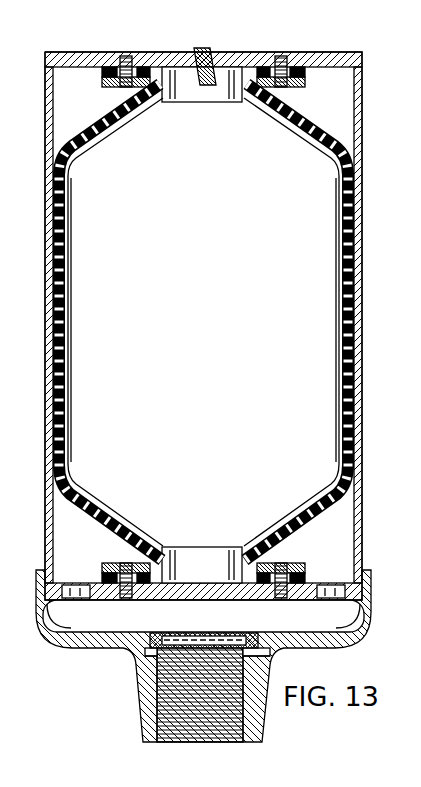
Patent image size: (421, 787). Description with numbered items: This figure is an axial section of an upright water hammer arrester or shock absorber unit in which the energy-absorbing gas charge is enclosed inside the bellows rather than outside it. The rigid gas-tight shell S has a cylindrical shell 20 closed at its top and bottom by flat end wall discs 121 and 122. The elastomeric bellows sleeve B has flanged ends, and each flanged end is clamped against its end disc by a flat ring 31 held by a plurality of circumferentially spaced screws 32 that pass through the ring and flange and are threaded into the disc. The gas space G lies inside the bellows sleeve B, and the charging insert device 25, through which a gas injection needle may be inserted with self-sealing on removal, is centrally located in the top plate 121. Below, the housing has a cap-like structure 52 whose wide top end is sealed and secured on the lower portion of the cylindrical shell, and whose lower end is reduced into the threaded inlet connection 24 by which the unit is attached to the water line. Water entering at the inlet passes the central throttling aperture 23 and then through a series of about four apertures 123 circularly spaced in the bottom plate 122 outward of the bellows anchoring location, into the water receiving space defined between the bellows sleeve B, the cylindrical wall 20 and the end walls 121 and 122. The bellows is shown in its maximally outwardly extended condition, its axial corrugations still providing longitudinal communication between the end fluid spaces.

The top end wall disc 121 is at (130, 53).
The charging insert device 25 is at (206, 50).
The flat ring 31 is at (102, 84).
The screws 32 is at (124, 88).
The shell S is at (44, 208).
The bellows sleeve B is at (76, 234).
The cylindrical shell 20 is at (52, 290).
The gas space G is at (197, 294).
The apertures 123 is at (62, 598).
The bottom end wall disc 122 is at (190, 600).
The throttling aperture 23 is at (206, 636).
The bottom cap 52 is at (108, 638).
The threaded inlet connection 24 is at (137, 702).